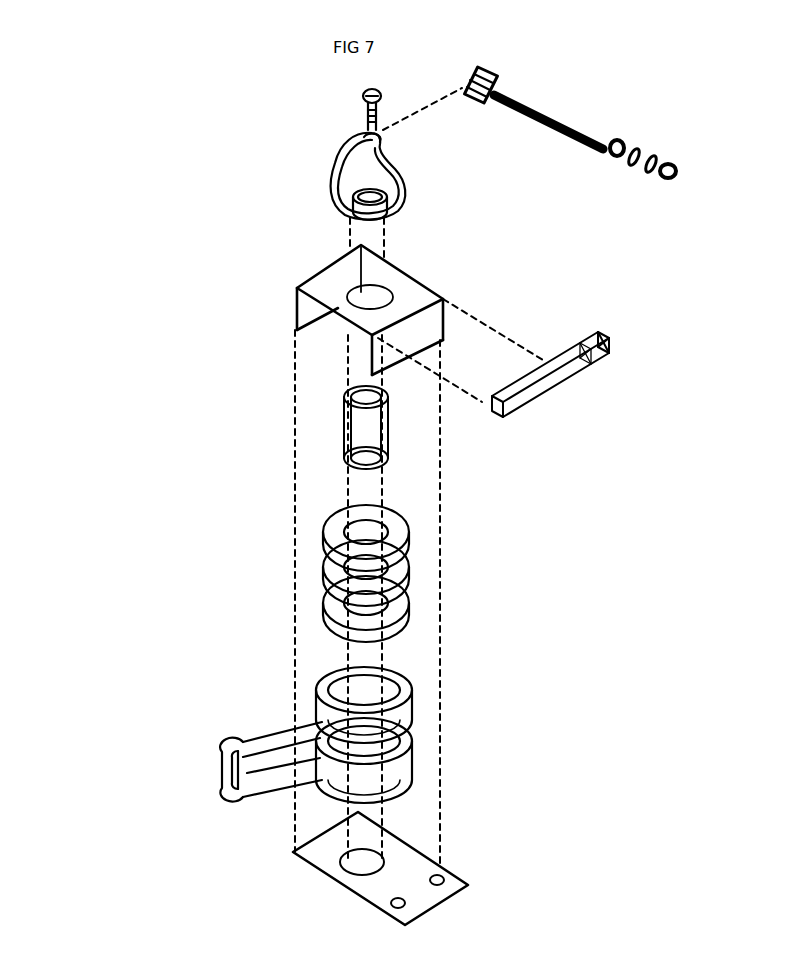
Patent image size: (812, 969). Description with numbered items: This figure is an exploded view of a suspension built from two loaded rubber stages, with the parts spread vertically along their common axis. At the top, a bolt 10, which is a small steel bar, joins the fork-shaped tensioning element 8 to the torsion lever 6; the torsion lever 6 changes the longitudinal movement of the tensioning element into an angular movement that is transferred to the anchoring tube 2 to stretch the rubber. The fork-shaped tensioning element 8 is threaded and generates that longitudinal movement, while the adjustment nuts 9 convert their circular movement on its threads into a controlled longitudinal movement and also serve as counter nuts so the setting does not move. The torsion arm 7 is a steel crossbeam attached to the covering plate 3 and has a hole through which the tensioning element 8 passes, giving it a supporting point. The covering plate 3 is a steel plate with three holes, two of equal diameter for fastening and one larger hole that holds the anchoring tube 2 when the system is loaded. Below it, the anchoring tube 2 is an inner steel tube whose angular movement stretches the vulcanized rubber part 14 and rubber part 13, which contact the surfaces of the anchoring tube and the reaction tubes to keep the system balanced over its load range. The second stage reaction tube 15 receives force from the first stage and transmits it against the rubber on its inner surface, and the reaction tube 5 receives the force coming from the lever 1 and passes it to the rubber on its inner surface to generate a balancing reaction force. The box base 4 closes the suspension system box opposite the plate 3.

The lever 1 is at (195, 739).
The anchoring tube 2 is at (279, 427).
The covering plate 3 is at (281, 302).
The box base 4 is at (432, 868).
The reaction tube 5 is at (467, 750).
The torsion lever 6 is at (330, 150).
The torsion arm 7 is at (560, 393).
The fork-shaped tensioning element 8 is at (568, 110).
The adjustment nuts 9 is at (680, 172).
The bolt 10 is at (358, 97).
The rubber part 13 is at (412, 593).
The rubber part 14 is at (412, 542).
The second stage reaction tube 15 is at (472, 691).